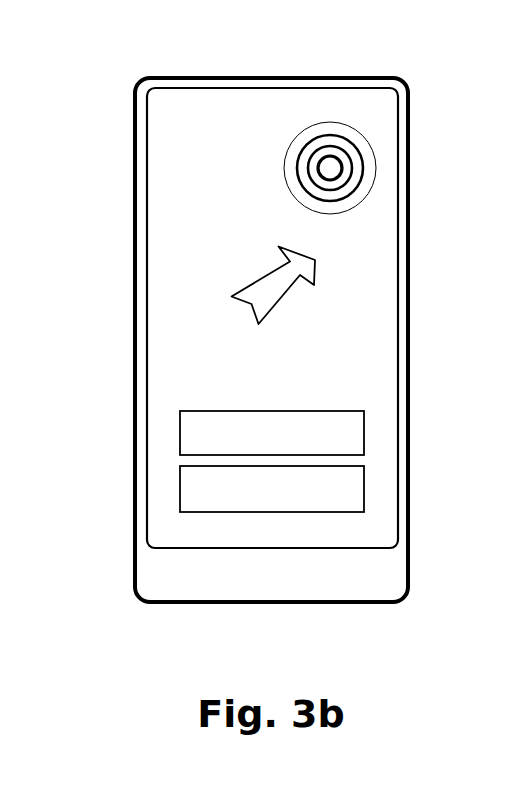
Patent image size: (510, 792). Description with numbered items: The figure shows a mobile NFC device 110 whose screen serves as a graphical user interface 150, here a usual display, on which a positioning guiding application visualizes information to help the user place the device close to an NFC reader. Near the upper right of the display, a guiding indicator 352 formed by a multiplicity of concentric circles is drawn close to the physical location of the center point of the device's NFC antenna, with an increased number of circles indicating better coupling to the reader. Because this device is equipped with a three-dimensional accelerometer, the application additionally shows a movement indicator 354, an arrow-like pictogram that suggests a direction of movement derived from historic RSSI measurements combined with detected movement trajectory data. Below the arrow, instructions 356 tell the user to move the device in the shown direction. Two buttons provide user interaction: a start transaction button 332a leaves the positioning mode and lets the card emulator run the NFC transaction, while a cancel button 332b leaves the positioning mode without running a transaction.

The mobile NFC device 110 is at (271, 77).
The graphical user interface 150 is at (272, 318).
The guiding indicator 352 is at (340, 123).
The movement indicator 354 is at (253, 283).
The instructions 356 is at (185, 341).
The start transaction button 332a is at (180, 433).
The cancel button 332b is at (180, 487).